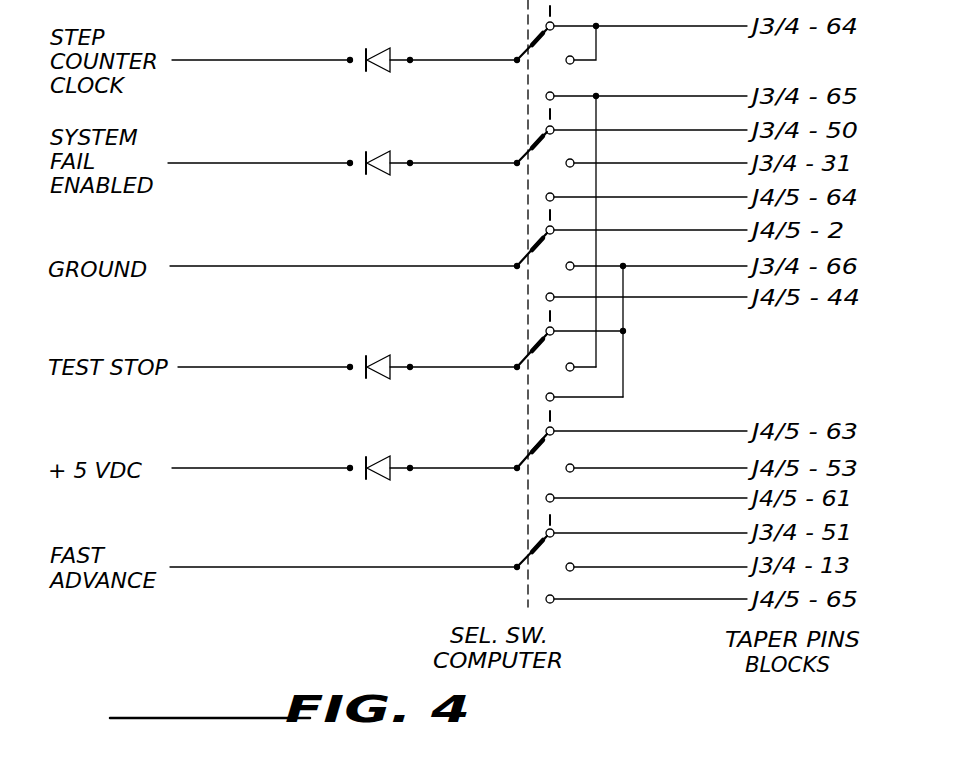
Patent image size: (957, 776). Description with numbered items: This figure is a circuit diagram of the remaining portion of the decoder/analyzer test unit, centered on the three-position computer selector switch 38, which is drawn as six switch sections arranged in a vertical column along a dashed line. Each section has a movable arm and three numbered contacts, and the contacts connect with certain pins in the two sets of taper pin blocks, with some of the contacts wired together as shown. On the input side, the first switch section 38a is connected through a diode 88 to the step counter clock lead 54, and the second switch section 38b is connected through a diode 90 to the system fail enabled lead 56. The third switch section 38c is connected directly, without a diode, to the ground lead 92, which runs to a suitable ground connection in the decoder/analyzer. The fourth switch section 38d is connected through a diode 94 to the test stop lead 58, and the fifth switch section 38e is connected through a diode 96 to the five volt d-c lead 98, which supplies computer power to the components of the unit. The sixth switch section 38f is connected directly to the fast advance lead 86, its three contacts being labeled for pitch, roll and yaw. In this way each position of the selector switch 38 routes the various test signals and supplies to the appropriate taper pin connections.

The step counter clock lead 54 is at (211, 60).
The system fail enabled lead 56 is at (199, 163).
The ground lead 92 is at (197, 266).
The test stop lead 58 is at (211, 367).
The 5 volts d-c lead 98 is at (207, 468).
The fast advance lead 86 is at (199, 567).
The diode 88 is at (382, 50).
The diode 90 is at (382, 153).
The diode 94 is at (382, 356).
The diode 96 is at (382, 457).
The computer selector switch 38 is at (527, 592).
The computer selector switch section 38a is at (517, 58).
The computer selector switch section 38b is at (517, 161).
The computer selector switch section 38c is at (517, 264).
The computer selector switch section 38d is at (517, 365).
The computer selector switch section 38e is at (517, 466).
The computer selector switch section 38f is at (517, 565).